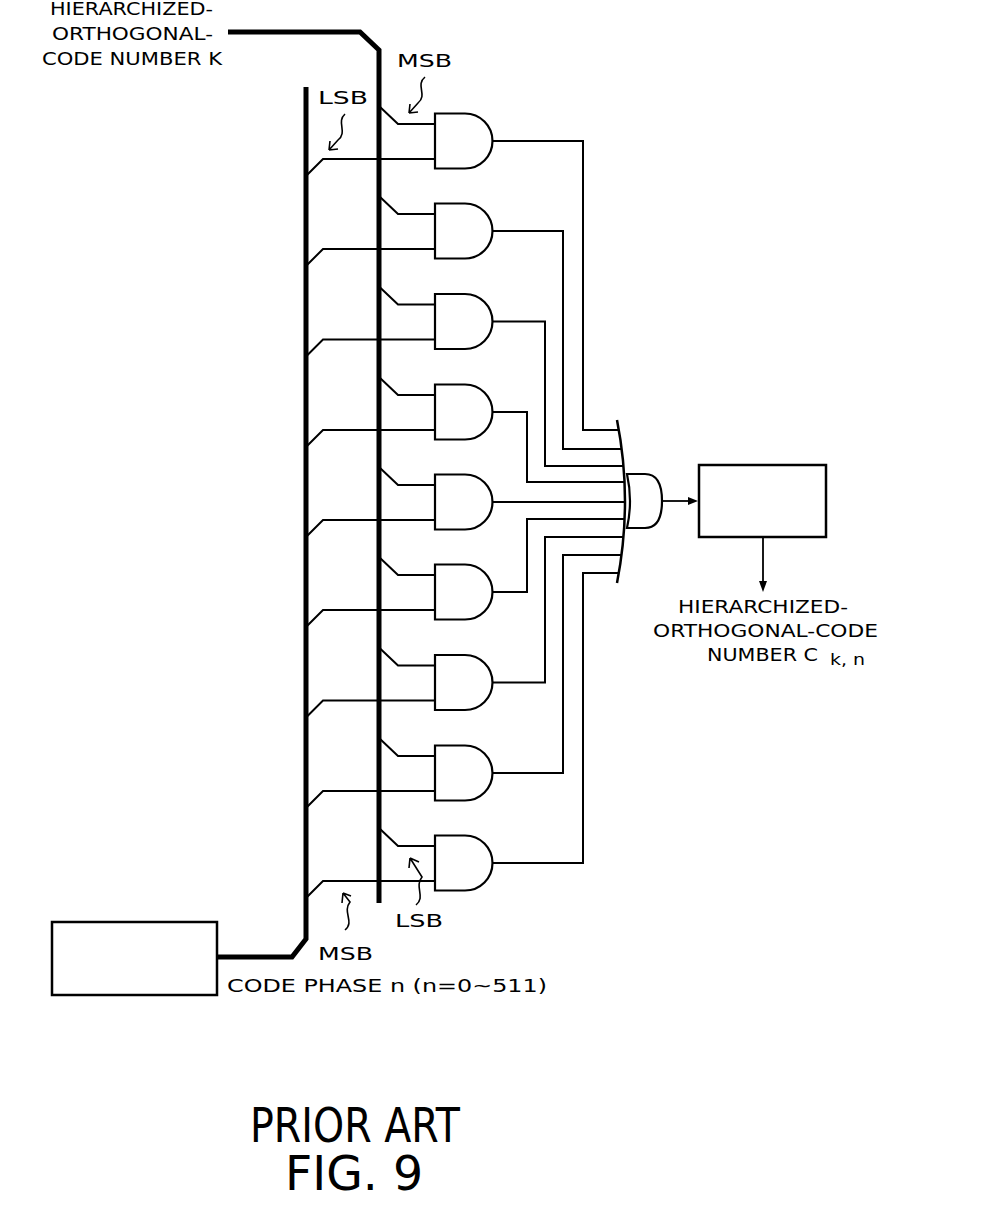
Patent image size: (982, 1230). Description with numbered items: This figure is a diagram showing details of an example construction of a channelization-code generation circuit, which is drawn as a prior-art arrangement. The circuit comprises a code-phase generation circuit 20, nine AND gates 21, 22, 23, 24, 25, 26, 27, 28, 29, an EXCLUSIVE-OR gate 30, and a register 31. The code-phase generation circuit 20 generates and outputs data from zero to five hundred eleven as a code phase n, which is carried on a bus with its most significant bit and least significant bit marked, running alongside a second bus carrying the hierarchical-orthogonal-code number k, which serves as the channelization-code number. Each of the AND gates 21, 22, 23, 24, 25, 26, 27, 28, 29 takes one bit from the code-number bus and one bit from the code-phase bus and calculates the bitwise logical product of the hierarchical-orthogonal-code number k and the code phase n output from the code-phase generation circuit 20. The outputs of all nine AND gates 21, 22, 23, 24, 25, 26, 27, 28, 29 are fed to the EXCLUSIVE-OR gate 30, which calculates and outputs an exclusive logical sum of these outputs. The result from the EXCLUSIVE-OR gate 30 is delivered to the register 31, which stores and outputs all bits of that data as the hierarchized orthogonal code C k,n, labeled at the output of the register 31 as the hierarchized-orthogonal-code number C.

The code-phase generation circuit 20 is at (106, 921).
The AND gate 21 is at (441, 113).
The AND gate 22 is at (441, 203).
The AND gate 23 is at (441, 293).
The AND gate 24 is at (441, 384).
The AND gate 25 is at (441, 474).
The AND gate 26 is at (441, 564).
The AND gate 27 is at (441, 654).
The AND gate 28 is at (441, 745).
The AND gate 29 is at (441, 835).
The EXCLUSIVE-OR gate 30 is at (636, 472).
The register 31 is at (702, 465).